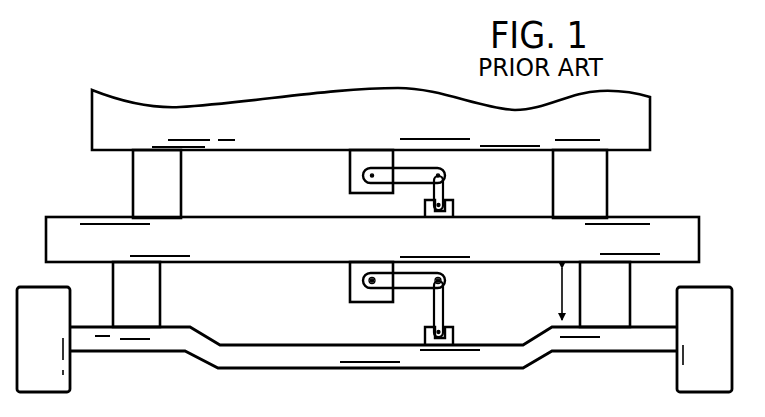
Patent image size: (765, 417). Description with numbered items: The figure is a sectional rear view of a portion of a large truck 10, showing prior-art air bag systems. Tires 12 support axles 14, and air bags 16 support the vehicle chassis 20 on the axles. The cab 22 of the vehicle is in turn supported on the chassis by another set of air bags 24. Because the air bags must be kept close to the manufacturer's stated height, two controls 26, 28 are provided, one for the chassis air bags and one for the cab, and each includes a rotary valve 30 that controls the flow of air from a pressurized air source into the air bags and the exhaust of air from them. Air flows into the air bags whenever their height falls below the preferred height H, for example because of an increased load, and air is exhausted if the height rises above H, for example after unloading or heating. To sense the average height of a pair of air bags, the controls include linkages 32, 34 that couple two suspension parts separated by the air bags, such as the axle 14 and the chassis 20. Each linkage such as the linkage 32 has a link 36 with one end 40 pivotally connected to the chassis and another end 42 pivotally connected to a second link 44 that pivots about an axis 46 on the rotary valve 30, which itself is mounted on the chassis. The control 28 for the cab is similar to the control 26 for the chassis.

The large truck 10 is at (67, 152).
The tires 12 is at (42, 392).
The axles 14 is at (245, 368).
The air bags 16 is at (160, 297).
The vehicle chassis 20 is at (651, 212).
The cab 22 is at (652, 125).
The air bags 24 is at (181, 191).
The control 26 is at (350, 272).
The control 28 is at (350, 165).
The rotary valve 30 is at (350, 182).
The linkage 32 is at (462, 284).
The linkage 34 is at (452, 181).
The link 36 is at (455, 288).
The end 40 is at (453, 335).
The end 42 is at (445, 280).
The second link 44 is at (410, 278).
The axis 46 is at (371, 277).
The preferred height H is at (556, 300).